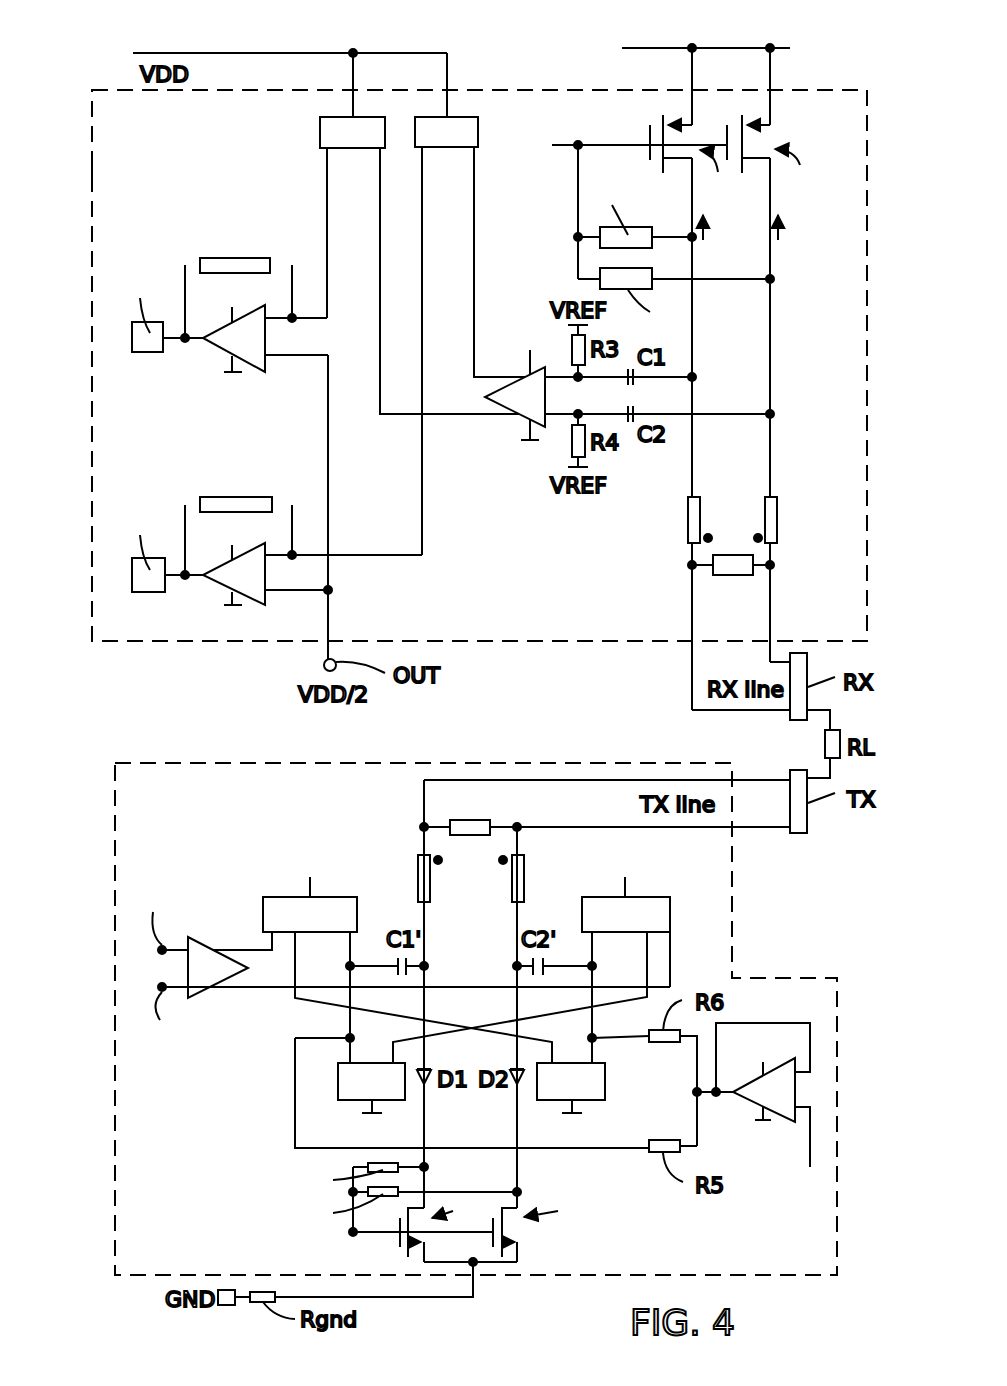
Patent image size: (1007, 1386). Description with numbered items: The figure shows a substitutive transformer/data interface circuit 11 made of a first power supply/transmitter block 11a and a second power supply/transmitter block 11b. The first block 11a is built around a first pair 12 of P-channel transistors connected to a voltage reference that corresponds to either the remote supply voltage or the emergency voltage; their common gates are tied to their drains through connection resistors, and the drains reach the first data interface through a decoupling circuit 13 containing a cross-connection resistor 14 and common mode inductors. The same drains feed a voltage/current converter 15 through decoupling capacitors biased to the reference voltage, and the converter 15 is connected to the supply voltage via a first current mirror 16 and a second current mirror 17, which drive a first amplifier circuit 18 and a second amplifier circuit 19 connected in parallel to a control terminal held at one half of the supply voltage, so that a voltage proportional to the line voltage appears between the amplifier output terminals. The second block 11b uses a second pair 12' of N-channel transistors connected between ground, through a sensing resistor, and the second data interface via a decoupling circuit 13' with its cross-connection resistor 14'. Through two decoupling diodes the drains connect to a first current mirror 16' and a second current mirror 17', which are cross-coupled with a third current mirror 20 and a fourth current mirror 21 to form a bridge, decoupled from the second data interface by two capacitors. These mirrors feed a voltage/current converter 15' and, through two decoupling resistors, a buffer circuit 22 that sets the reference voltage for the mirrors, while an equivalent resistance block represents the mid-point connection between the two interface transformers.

The substitutive transformer/data interface circuit 11 is at (552, 75).
The first power supply/transmitter block 11a is at (110, 170).
The second power supply/transmitter block 11b is at (128, 832).
The first pair of P-channel MOS transistors 12 is at (730, 270).
The second pair of N-channel MOS transistors 12' is at (484, 1230).
The decoupling circuit 13 is at (732, 579).
The decoupling circuit 13' is at (471, 994).
The cross-connection resistor 14 is at (731, 590).
The cross-connection resistor 14' is at (482, 812).
The voltage/current converter 15 is at (621, 410).
The voltage/current converter 15' is at (402, 970).
The first current mirror 16 is at (470, 336).
The first current mirror 16' is at (397, 952).
The second current mirror 17 is at (419, 265).
The second current mirror 17' is at (558, 956).
The first amplifier circuit 18 is at (235, 252).
The second amplifier circuit 19 is at (235, 490).
The third current mirror 20 is at (347, 1080).
The fourth current mirror 21 is at (605, 1083).
The buffer circuit 22 is at (763, 1007).